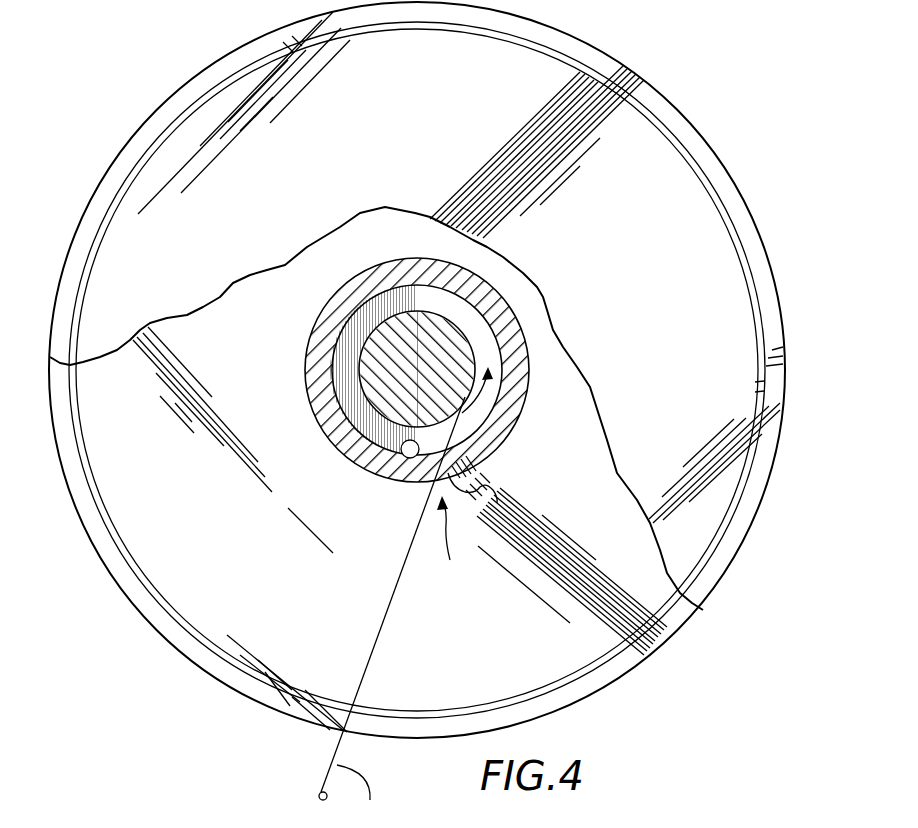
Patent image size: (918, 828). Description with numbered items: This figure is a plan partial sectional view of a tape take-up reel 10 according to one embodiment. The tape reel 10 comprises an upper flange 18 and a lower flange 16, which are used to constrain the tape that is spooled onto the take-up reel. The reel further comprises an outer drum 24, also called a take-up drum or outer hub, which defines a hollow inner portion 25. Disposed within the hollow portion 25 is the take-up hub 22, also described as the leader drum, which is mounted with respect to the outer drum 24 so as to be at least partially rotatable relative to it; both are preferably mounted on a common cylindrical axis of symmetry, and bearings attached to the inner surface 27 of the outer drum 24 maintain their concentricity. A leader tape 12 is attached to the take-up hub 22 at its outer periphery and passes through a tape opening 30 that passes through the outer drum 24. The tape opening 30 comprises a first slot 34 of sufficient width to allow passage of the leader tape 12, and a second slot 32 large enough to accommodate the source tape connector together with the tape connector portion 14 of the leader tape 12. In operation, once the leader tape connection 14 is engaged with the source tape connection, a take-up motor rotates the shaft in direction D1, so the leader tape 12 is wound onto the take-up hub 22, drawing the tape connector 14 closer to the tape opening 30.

The tape reel 10 is at (148, 42).
The leader tape 12 is at (360, 796).
The tape connector portion 14 is at (318, 798).
The lower flange 16 is at (498, 647).
The upper flange 18 is at (657, 275).
The take-up hub 22 is at (372, 358).
The outer drum 24 is at (369, 462).
The hollow inner portion 25 is at (372, 423).
The inner surface 27 is at (404, 458).
The tape opening 30 is at (445, 543).
The second slot 32 is at (477, 505).
The first slot 34 is at (463, 454).
The direction of rotation D1 is at (477, 394).